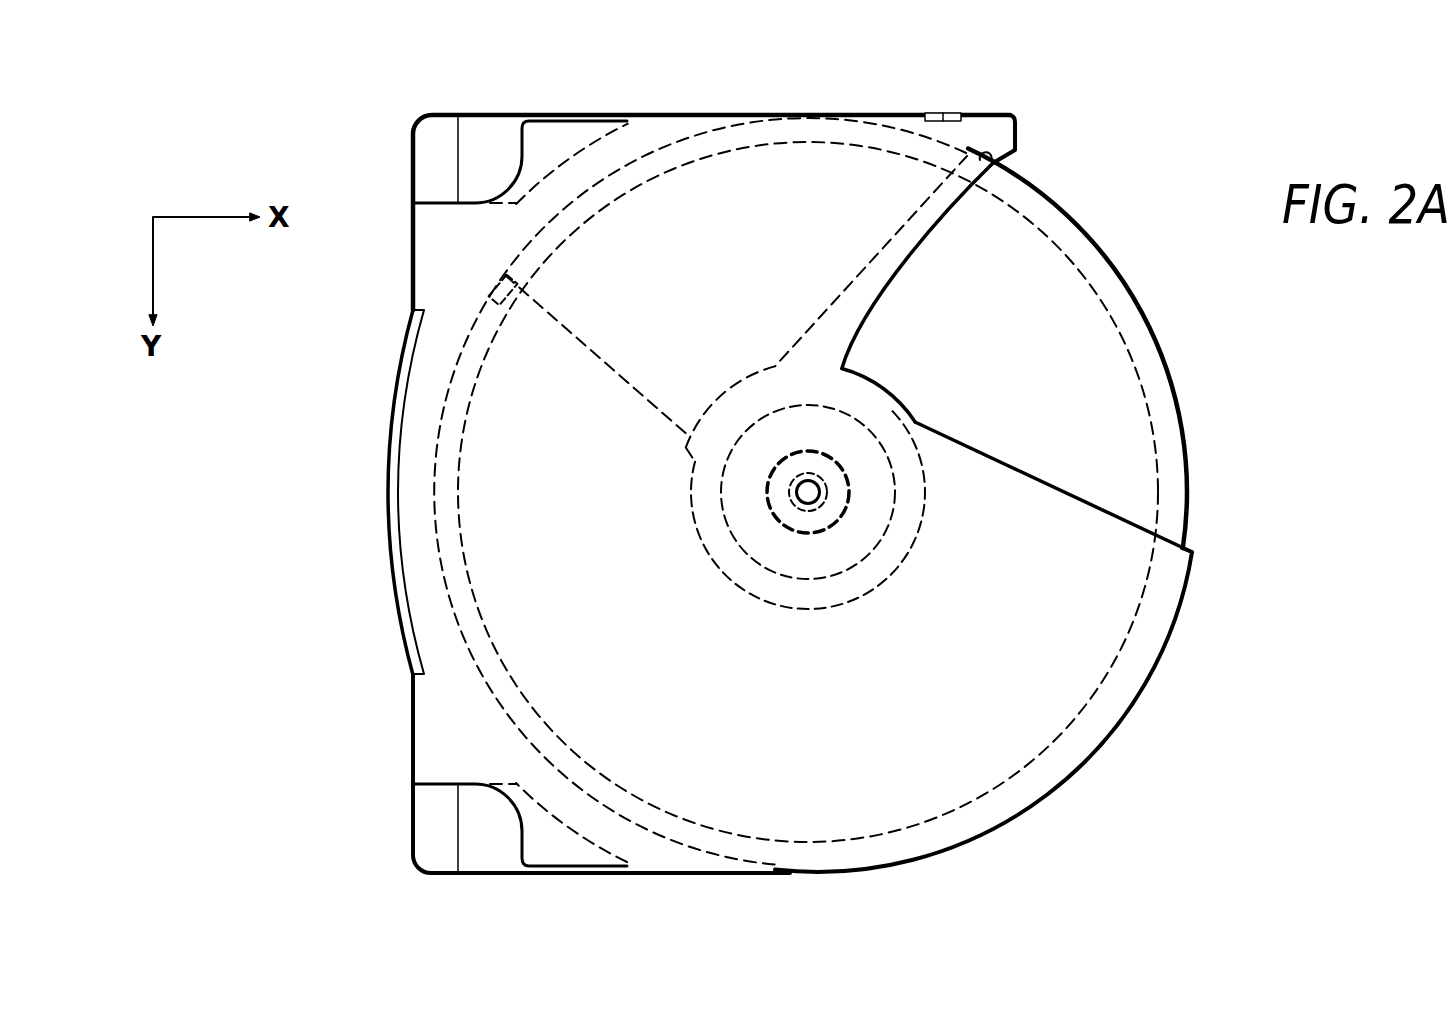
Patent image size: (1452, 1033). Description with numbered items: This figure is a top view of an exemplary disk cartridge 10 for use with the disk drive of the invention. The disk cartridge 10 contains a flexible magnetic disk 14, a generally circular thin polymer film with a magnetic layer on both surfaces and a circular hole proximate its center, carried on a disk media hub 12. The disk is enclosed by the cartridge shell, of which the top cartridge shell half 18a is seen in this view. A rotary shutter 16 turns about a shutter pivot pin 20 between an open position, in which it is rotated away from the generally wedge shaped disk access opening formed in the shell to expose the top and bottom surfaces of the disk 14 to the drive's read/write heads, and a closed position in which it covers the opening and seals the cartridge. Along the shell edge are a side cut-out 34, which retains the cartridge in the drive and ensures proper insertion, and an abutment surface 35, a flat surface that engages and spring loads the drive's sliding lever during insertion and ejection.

The disk cartridge 10 is at (172, 843).
The disk media hub 12 is at (738, 478).
The flexible magnetic disk 14 is at (758, 217).
The rotary shutter 16 is at (1095, 248).
The top cartridge shell half 18a is at (1057, 690).
The shutter pivot pin 20 is at (817, 488).
The side cut-out 34 is at (940, 113).
The abutment surface 35 is at (1017, 128).